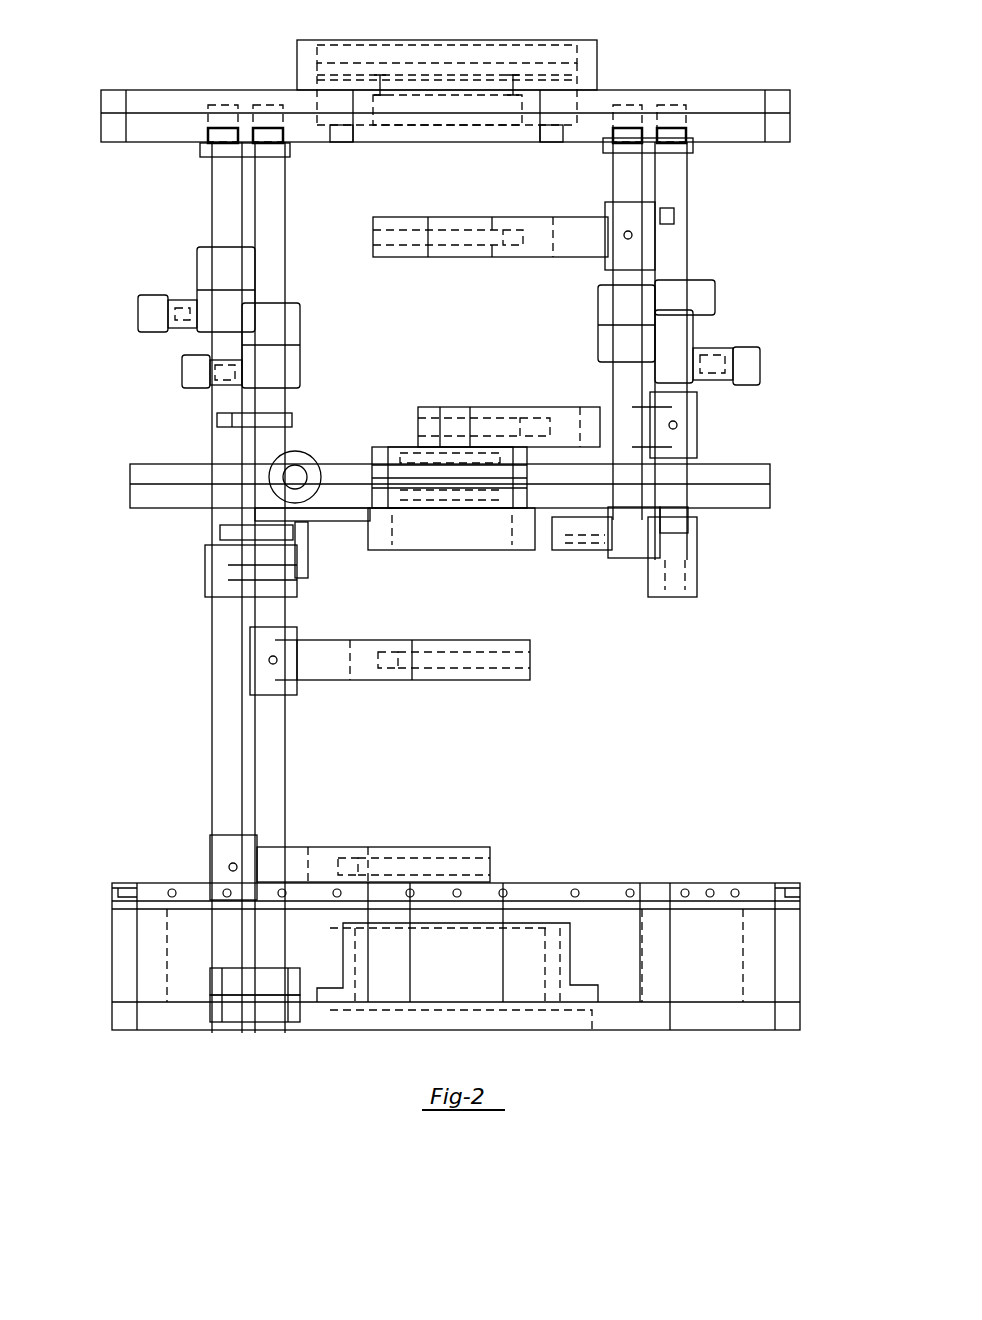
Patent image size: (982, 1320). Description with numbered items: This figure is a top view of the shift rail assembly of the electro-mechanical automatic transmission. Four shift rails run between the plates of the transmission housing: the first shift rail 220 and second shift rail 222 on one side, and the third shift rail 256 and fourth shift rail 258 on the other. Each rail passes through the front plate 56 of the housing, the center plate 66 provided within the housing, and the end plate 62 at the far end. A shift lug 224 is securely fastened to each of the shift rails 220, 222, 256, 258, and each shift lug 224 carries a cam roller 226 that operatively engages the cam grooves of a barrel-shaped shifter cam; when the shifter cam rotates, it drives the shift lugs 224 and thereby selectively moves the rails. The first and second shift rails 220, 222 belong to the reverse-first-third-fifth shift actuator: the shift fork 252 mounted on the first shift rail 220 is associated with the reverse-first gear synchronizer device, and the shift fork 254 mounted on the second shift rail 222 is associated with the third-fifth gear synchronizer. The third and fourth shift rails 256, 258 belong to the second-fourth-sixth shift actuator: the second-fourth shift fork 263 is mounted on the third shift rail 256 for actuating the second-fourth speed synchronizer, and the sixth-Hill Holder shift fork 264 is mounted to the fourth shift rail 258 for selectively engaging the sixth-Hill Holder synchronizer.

The front plate 56 is at (737, 100).
The end plate 62 is at (710, 1013).
The center plate 66 is at (722, 466).
The first shift rail 220 is at (263, 185).
The second shift rail 222 is at (215, 185).
The shift lug 224 is at (187, 288).
The cam roller 226 is at (150, 313).
The shift fork 252 is at (360, 650).
The shift fork 254 is at (318, 858).
The third shift rail 256 is at (620, 164).
The fourth shift rail 258 is at (672, 165).
The 2-4 shift fork 263 is at (437, 235).
The sixth-Hill Holder shift fork 264 is at (442, 425).